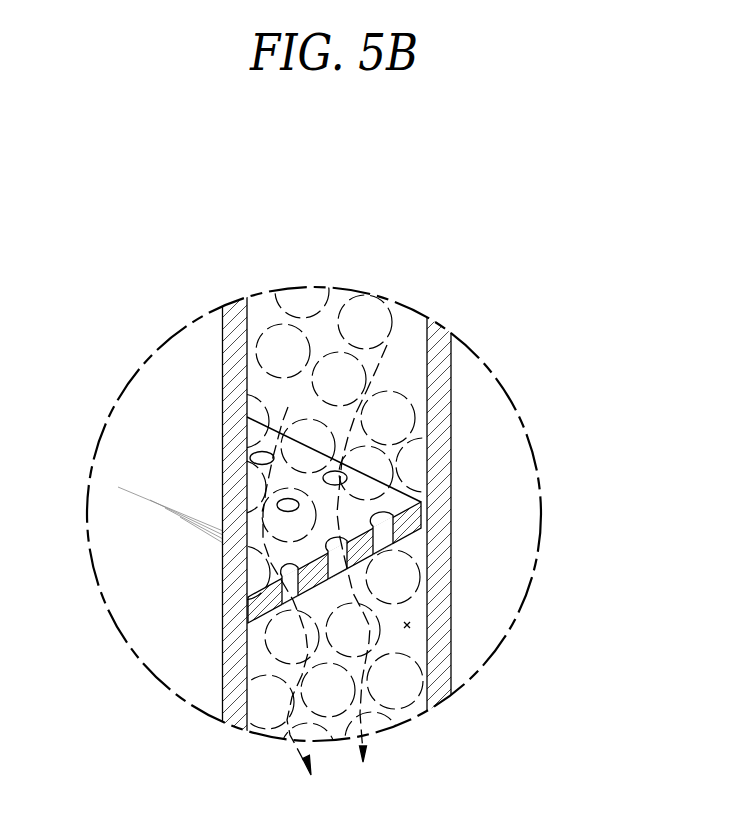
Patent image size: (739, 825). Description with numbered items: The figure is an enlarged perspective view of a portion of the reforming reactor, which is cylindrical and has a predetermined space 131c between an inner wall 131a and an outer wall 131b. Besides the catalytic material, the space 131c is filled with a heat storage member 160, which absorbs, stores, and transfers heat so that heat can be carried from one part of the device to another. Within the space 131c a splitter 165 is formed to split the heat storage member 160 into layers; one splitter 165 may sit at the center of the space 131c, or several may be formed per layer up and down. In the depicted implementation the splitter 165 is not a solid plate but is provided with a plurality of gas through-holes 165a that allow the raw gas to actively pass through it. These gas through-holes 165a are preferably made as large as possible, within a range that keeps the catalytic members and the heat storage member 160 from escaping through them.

The heat storage member 160 is at (407, 398).
The inner wall 131a is at (247, 585).
The outer wall 131b is at (408, 474).
The space 131c is at (412, 624).
The splitter 165 is at (408, 523).
The gas through-holes 165a is at (392, 542).